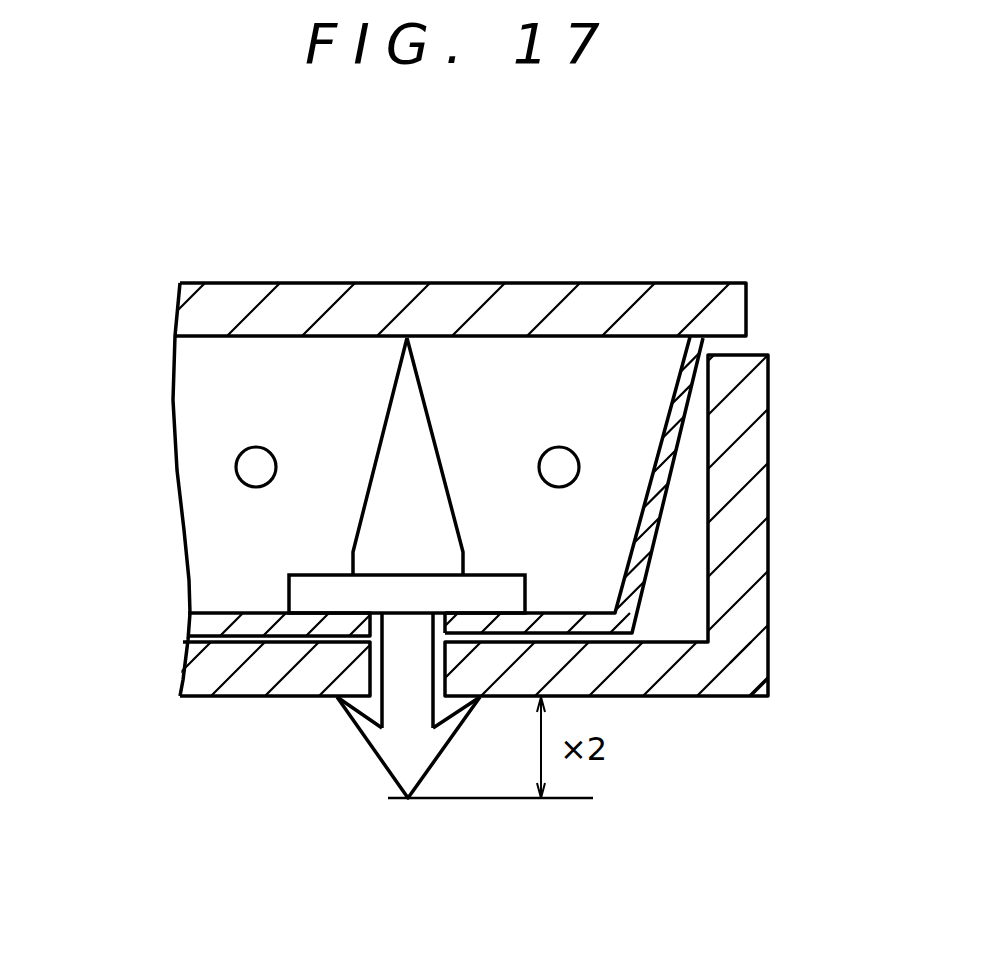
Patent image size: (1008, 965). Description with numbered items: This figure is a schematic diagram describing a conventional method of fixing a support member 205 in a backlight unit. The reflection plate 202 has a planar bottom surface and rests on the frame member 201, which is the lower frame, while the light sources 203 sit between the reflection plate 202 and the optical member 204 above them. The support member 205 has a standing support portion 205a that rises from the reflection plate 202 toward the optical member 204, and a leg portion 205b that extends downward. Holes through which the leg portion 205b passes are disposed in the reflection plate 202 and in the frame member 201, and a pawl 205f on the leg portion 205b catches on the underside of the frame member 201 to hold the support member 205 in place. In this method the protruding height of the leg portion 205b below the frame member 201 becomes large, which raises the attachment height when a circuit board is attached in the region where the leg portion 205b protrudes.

The frame member 201 is at (742, 560).
The reflection plate 202 is at (668, 460).
The light sources 203 is at (263, 463).
The optical member 204 is at (690, 297).
The support member 205 is at (280, 628).
The standing support portion 205a is at (347, 595).
The leg portion 205b is at (405, 673).
The pawl 205f is at (357, 727).